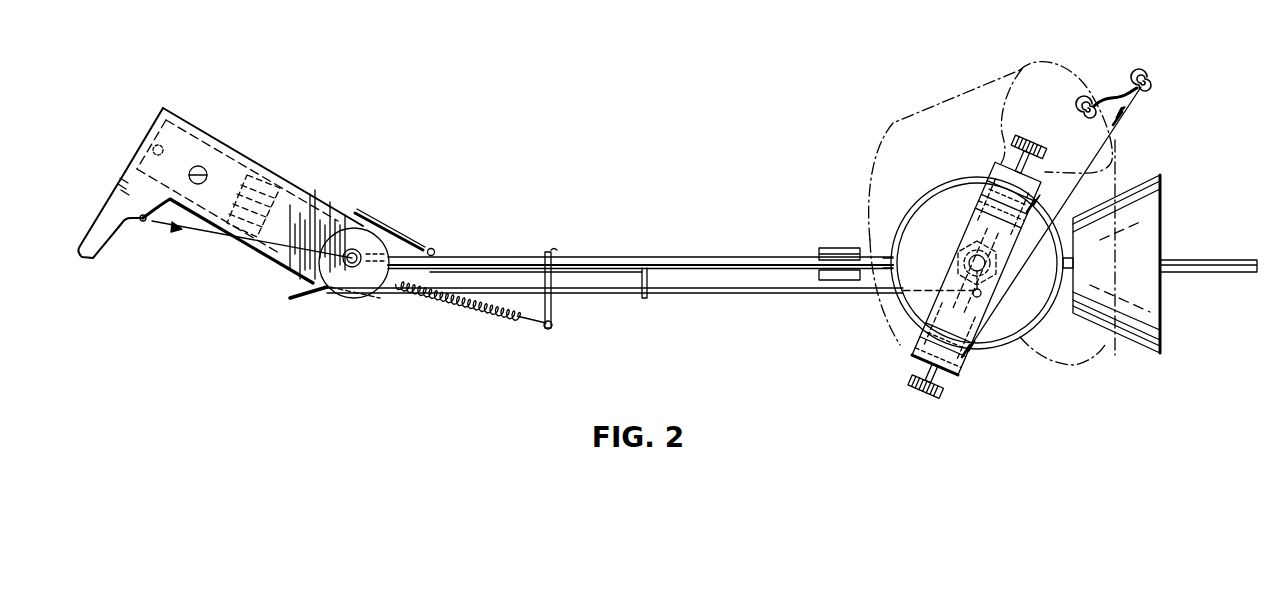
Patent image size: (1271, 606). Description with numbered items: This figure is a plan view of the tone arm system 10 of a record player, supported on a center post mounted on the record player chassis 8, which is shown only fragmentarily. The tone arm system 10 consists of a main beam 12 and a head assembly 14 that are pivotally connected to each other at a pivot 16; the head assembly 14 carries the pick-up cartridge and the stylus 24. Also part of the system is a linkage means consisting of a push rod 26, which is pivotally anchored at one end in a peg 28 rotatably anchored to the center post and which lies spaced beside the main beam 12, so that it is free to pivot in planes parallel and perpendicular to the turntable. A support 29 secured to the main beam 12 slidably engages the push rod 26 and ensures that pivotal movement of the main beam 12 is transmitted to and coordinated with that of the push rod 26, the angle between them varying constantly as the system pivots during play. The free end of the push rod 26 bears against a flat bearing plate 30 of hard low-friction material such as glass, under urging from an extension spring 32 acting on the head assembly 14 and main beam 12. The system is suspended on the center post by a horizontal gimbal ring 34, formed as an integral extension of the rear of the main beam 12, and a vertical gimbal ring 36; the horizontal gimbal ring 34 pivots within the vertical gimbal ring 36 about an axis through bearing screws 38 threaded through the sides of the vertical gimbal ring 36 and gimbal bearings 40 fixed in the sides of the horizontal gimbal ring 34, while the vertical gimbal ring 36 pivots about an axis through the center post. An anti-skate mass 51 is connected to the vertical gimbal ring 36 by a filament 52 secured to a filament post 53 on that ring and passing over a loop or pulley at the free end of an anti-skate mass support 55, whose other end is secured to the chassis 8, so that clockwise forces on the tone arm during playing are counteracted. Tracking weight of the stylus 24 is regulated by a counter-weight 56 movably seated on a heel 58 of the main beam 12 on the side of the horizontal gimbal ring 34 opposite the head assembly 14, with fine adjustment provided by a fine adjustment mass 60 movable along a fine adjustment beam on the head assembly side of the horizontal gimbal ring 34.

The record player chassis 8 is at (910, 147).
The tone arm system 10 is at (673, 243).
The main beam 12 is at (603, 257).
The head assembly 14 is at (307, 207).
The pivot 16 is at (388, 242).
The stylus 24 is at (162, 142).
The push rod 26 is at (784, 296).
The peg 28 is at (982, 284).
The support 29 is at (424, 252).
The bearing plate 30 is at (293, 300).
The extension spring 32 is at (480, 310).
The horizontal gimbal ring 34 is at (957, 368).
The vertical gimbal ring 36 is at (1050, 176).
The bearing screws 38 is at (1030, 67).
The gimbal bearings 40 is at (990, 197).
The anti-skate mass 51 is at (1151, 79).
The filament 52 is at (1100, 137).
The filament post 53 is at (981, 296).
The anti-skate mass support 55 is at (1103, 97).
The counter-weight 56 is at (1158, 352).
The heel 58 is at (1237, 272).
The fine adjustment mass 60 is at (843, 248).